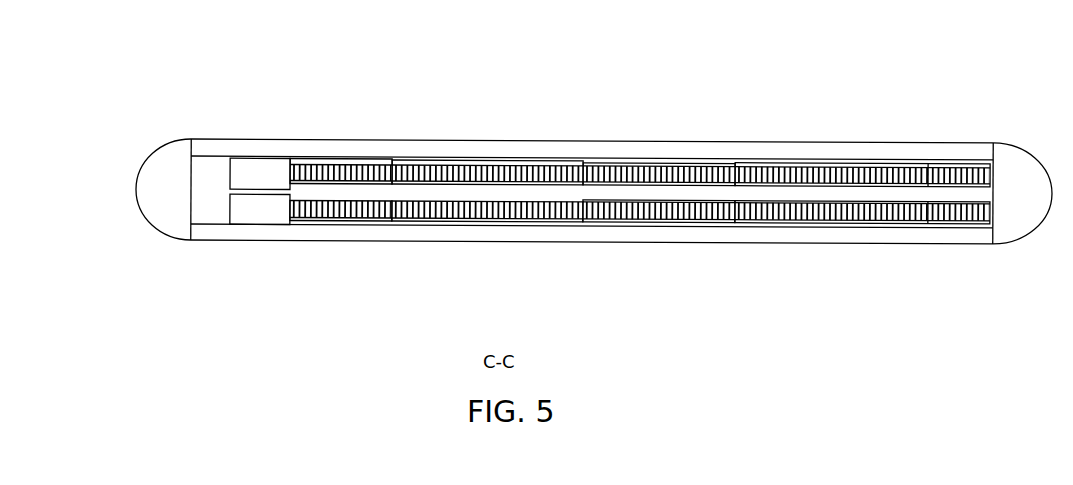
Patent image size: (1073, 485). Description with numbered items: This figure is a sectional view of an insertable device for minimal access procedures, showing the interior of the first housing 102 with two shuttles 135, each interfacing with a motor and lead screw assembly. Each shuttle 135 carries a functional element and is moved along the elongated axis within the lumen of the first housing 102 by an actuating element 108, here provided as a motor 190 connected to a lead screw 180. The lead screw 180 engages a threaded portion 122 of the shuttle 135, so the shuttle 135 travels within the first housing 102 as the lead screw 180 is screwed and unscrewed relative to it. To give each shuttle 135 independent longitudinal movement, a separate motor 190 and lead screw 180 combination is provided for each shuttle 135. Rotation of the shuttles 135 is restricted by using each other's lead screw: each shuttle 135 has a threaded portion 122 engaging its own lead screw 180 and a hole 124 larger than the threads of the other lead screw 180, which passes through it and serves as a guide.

The first housing 102 is at (866, 142).
The actuating element 108 is at (260, 189).
The motor 190 is at (262, 225).
The lead screw 180 is at (368, 183).
The threaded portion 122 is at (470, 218).
The hole 124 is at (486, 160).
The shuttle 135 is at (778, 227).